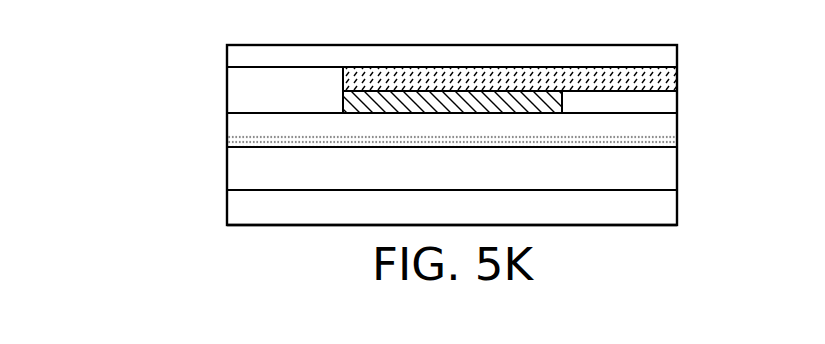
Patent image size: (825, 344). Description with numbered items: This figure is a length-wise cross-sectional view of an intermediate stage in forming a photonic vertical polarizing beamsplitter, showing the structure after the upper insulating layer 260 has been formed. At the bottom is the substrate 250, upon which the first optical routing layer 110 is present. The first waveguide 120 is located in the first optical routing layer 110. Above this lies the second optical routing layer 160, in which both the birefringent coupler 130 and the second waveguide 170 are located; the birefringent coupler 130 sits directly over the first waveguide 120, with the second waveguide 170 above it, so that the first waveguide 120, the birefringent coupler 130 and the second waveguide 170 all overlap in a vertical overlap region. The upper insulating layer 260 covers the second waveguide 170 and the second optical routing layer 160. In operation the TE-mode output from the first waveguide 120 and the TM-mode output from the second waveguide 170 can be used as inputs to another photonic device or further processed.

The upper insulating layer 260 is at (665, 57).
The second waveguide 170 is at (665, 79).
The second optical routing layer 160 is at (237, 76).
The birefringent coupler 130 is at (343, 97).
The first waveguide 120 is at (665, 132).
The first optical routing layer 110 is at (665, 170).
The substrate 250 is at (665, 208).